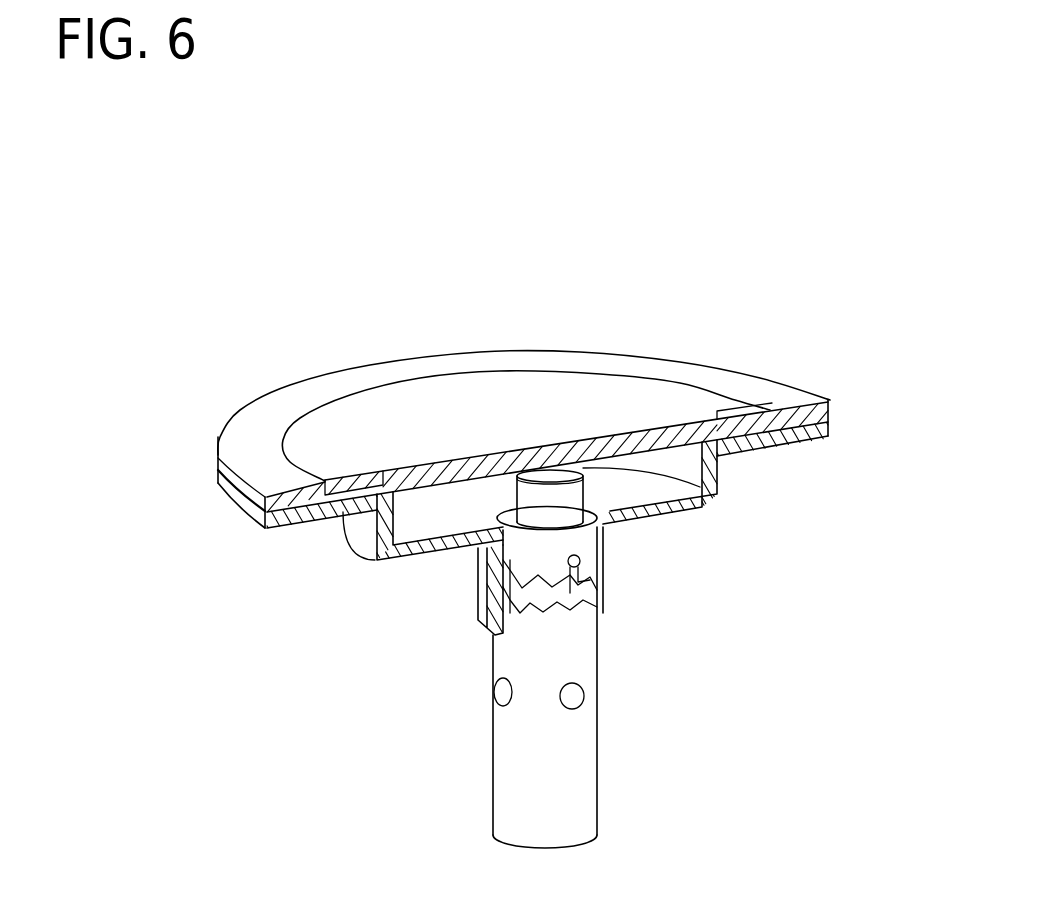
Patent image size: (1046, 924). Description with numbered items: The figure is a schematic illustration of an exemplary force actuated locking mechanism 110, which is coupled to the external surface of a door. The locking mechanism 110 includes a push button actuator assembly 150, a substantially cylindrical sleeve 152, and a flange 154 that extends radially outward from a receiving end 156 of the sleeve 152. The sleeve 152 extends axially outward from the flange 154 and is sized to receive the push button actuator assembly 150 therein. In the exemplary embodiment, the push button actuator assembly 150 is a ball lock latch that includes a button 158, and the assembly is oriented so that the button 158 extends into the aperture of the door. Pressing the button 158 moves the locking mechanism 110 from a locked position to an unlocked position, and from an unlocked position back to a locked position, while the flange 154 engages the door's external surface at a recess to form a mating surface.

The force actuated locking mechanism 110 is at (200, 287).
The push button actuator assembly 150 is at (597, 657).
The substantially cylindrical sleeve 152 is at (483, 595).
The flange 154 is at (760, 447).
The receiving end 156 is at (497, 520).
The button 158 is at (568, 470).